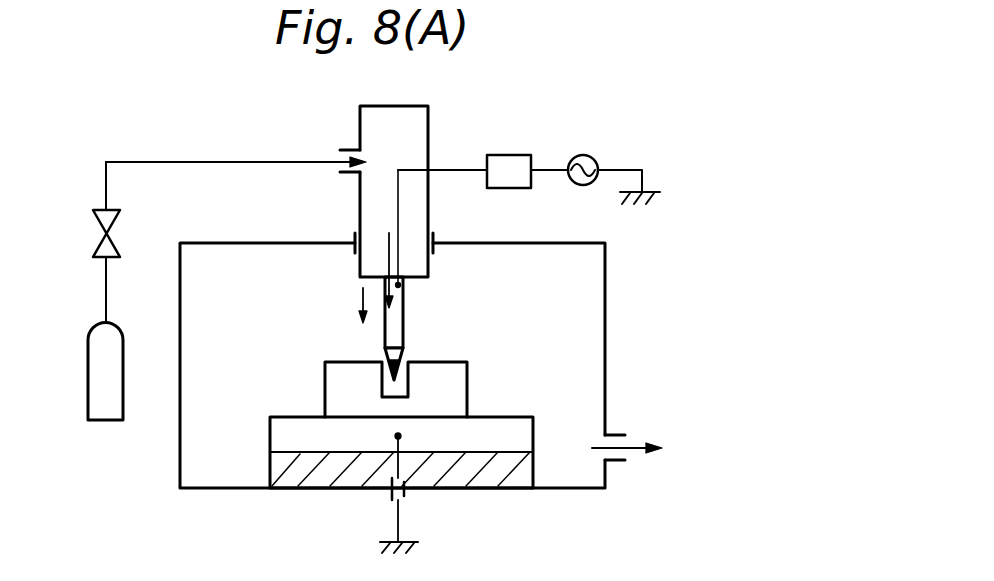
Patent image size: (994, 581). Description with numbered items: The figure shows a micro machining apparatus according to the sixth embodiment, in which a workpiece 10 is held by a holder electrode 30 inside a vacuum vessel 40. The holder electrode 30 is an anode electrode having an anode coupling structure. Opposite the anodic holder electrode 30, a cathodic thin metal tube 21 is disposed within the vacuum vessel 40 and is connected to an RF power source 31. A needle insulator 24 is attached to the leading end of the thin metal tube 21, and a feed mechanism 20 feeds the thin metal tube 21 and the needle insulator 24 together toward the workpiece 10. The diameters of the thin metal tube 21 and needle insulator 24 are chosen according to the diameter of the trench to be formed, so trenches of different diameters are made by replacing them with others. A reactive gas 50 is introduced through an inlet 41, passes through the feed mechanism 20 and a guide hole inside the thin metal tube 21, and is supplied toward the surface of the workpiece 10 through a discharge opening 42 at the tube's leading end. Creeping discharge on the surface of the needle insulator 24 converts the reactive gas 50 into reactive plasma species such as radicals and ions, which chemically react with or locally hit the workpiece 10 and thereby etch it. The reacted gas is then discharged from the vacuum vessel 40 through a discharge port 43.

The workpiece 10 is at (460, 395).
The feed mechanism 20 is at (418, 132).
The thin metal tube 21 is at (400, 322).
The needle insulator 24 is at (384, 352).
The holder electrode 30 is at (328, 445).
The RF power source 31 is at (590, 155).
The vacuum vessel 40 is at (605, 302).
The inlet 41 is at (348, 148).
The discharge opening 42 is at (405, 354).
The discharge port 43 is at (613, 432).
The reactive gas 50 is at (108, 423).